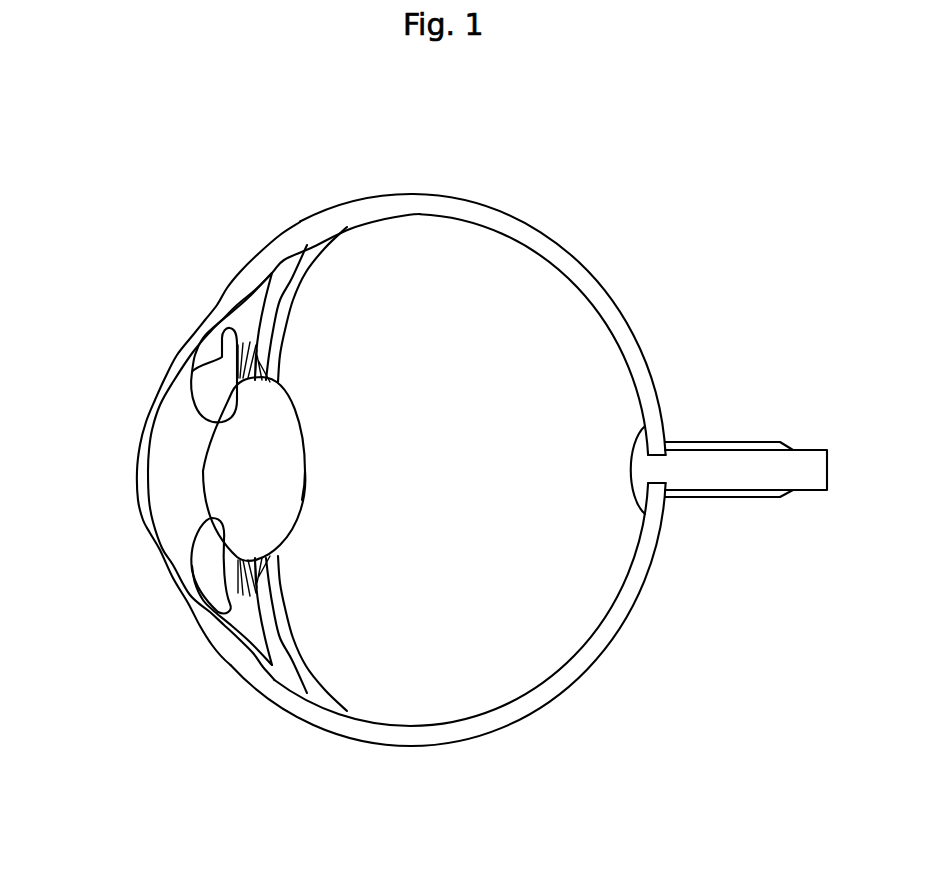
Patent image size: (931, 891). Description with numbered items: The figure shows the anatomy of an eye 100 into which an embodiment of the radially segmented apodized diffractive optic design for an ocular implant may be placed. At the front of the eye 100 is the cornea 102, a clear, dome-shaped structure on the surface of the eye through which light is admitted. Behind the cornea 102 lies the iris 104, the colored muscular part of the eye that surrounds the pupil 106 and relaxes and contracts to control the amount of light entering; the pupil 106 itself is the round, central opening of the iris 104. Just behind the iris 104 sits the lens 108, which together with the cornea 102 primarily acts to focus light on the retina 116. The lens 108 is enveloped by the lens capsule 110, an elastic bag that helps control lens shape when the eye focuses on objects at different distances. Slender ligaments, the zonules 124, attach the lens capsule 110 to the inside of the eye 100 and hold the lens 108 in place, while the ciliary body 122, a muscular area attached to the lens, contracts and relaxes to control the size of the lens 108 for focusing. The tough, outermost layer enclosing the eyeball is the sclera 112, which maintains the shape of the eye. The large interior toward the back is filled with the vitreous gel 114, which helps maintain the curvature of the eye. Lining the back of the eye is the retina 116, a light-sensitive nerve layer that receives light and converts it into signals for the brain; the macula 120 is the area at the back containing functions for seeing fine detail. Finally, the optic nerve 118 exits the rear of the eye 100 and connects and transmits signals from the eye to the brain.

The eye 100 is at (676, 242).
The cornea 102 is at (143, 420).
The iris 104 is at (190, 562).
The pupil 106 is at (186, 468).
The lens 108 is at (283, 421).
The lens capsule 110 is at (306, 472).
The sclera 112 is at (497, 208).
The vitreous gel 114 is at (494, 380).
The retina 116 is at (619, 592).
The optic nerve 118 is at (715, 411).
The macula 120 is at (628, 458).
The ciliary body 122 is at (250, 604).
The zonules 124 is at (253, 368).